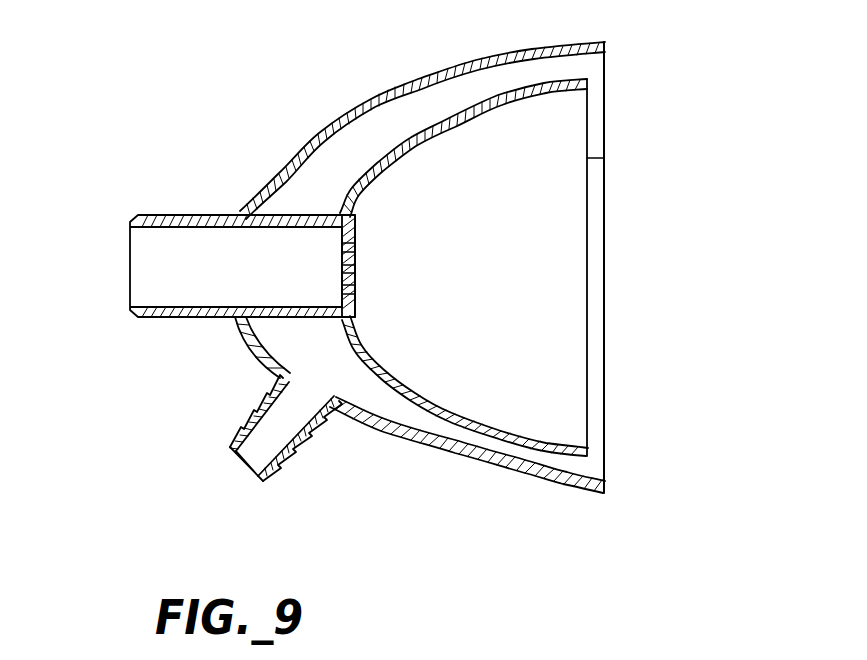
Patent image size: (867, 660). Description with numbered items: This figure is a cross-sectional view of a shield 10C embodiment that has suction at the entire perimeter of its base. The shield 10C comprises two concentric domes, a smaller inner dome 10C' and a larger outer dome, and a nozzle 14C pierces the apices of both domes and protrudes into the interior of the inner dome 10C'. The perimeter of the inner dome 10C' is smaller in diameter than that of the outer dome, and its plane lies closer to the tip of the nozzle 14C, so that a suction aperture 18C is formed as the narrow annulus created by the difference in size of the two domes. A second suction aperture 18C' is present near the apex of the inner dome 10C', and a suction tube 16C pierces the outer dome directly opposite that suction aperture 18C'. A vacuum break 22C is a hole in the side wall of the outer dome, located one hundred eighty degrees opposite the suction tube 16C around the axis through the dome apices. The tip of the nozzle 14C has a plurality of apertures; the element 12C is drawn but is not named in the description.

The shield 10C is at (471, 60).
The vacuum break 22C is at (376, 100).
The inner dome 10C′ is at (603, 153).
The suction aperture 18C is at (590, 63).
The suction aperture 18C′ is at (367, 342).
The inlet tube 12C is at (162, 318).
The nozzle 14C is at (355, 243).
The suction tube 16C is at (272, 480).